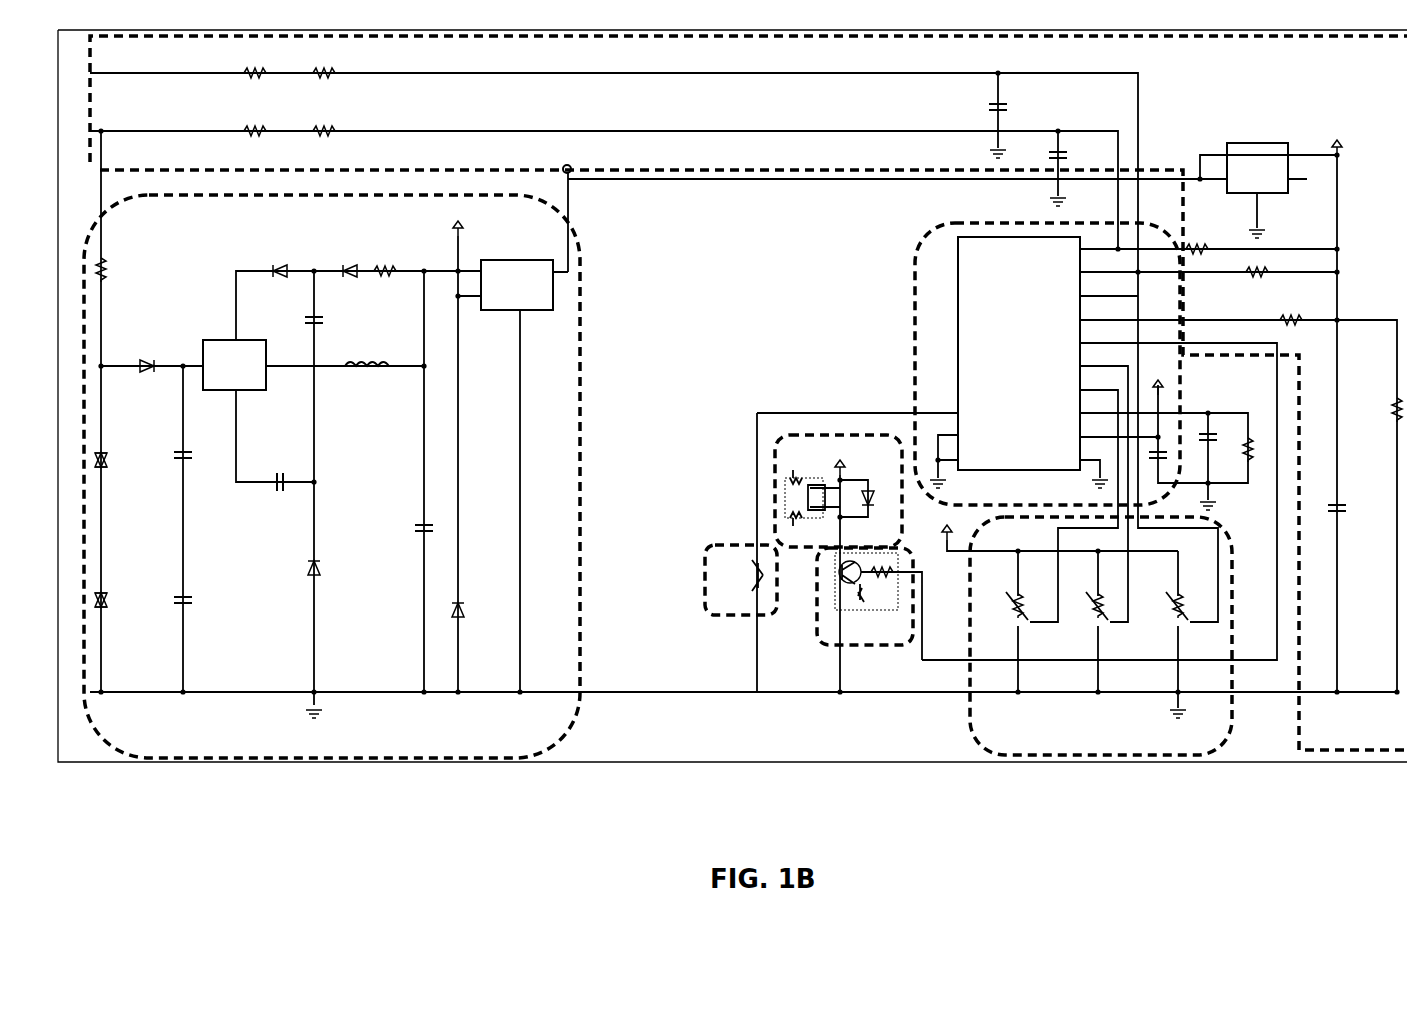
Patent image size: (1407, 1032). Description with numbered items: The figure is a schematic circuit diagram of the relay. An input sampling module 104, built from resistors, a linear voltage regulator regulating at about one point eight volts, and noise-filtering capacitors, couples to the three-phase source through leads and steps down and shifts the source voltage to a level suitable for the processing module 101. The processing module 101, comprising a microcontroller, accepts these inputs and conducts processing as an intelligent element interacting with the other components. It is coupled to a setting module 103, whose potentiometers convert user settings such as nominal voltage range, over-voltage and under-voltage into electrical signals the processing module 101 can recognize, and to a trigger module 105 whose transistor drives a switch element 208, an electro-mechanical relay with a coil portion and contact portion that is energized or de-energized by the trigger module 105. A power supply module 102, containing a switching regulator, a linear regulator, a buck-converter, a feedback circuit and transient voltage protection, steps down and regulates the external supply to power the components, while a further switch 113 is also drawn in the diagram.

The processing module 101 is at (1096, 441).
The power supply module 102 is at (332, 443).
The setting module 103 is at (1080, 630).
The input sampling module 104 is at (734, 393).
The trigger module 105 is at (908, 645).
The switch SW1 113 is at (702, 600).
The switch element 208 is at (808, 435).